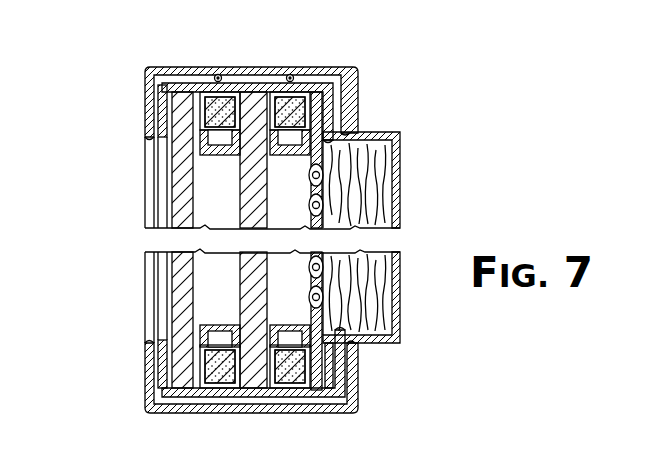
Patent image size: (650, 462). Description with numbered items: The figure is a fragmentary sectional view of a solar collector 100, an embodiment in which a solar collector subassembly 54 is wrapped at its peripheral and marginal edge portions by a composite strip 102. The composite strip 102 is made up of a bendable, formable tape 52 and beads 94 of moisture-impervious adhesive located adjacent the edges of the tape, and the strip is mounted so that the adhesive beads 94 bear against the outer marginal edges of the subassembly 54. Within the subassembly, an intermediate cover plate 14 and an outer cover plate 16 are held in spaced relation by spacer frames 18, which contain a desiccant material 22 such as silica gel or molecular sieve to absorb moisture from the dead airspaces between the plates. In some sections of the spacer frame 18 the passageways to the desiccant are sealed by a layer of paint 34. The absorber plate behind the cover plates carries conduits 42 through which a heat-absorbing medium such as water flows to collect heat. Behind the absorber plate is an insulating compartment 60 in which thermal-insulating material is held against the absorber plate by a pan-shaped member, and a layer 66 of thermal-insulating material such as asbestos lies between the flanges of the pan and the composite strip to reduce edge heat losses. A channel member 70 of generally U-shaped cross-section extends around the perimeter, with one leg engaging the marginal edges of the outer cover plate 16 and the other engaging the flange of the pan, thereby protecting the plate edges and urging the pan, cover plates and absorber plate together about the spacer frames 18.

The channel member 70 is at (183, 64).
The composite strip 102 is at (254, 68).
The layer of thermal-insulating material 66 is at (342, 90).
The bendable, formable tape 52 is at (160, 115).
The outer cover plate 16 is at (178, 183).
The layer of paint 34 is at (248, 161).
The solar collector subassembly 54 is at (146, 243).
The intermediate cover plate 14 is at (248, 270).
The spacer frame 18 is at (264, 317).
The conduits 42 is at (318, 233).
The desiccant material 22 is at (252, 368).
The beads of moisture-impervious adhesive 94 is at (327, 400).
The solar collector 100 is at (438, 136).
The insulating compartment 60 is at (410, 199).